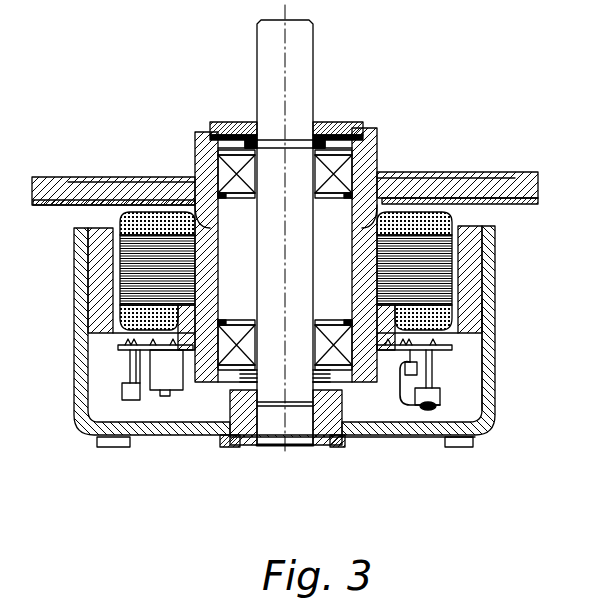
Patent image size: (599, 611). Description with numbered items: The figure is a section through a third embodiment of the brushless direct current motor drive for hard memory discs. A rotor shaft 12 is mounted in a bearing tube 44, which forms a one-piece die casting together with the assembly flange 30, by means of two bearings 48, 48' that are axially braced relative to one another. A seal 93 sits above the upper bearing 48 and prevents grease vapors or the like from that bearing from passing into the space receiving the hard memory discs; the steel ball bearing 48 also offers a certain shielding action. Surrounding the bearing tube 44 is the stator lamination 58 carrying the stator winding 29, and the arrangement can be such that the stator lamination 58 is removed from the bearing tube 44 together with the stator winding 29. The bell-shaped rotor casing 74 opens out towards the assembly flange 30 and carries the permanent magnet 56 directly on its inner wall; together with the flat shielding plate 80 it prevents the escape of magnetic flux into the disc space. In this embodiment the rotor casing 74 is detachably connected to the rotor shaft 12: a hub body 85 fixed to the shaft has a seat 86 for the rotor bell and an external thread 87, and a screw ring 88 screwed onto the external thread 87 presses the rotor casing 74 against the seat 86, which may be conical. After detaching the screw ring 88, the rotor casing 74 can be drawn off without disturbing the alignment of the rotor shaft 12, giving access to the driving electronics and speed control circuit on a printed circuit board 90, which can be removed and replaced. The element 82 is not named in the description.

The rotor shaft 12 is at (300, 70).
The seal 93 is at (220, 122).
The assembly flange 30 is at (420, 178).
The shielding plate 80 is at (500, 204).
The bearing 48 is at (285, 193).
The bearing tube 44 is at (366, 252).
The stator lamination 58 is at (120, 272).
The stator winding 29 is at (110, 322).
The printed circuit board 90 is at (120, 348).
The permanent magnet 56 is at (480, 264).
The rotor casing 74 is at (490, 342).
The bearing 48' is at (285, 330).
The hub body 85 is at (240, 408).
The external thread 87 is at (240, 445).
The screw ring 88 is at (336, 447).
The seat 86 is at (362, 437).
The foot 82 is at (115, 447).